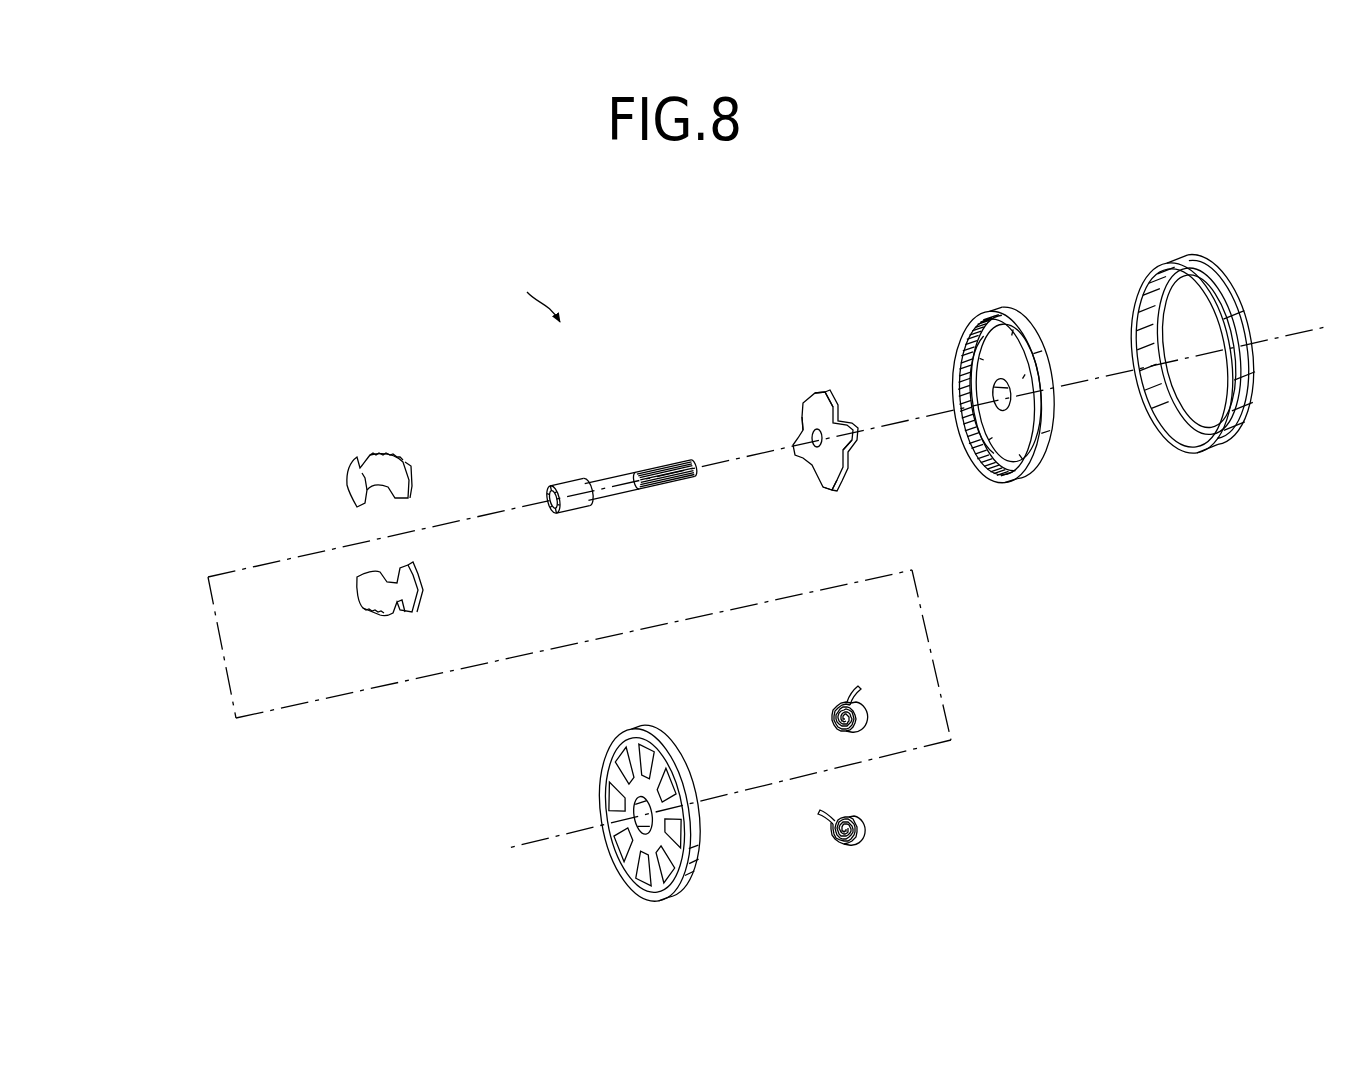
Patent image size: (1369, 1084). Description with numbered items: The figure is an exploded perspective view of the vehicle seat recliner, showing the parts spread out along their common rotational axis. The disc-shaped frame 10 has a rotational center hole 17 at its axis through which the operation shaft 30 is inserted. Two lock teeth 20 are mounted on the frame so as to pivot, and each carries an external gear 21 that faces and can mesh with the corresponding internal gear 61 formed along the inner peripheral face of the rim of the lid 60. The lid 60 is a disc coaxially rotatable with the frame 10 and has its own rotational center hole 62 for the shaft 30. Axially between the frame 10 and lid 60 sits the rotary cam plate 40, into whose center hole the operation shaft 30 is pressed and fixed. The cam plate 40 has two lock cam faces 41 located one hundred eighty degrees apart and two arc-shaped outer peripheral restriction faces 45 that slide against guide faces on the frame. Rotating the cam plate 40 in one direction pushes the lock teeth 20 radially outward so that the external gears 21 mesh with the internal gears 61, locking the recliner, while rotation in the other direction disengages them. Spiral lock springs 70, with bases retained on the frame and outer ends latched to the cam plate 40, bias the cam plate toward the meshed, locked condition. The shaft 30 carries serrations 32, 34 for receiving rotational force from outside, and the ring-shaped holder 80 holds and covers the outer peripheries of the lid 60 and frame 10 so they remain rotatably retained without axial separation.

The frame 10 is at (600, 748).
The rotational center hole 17 is at (640, 815).
The lock tooth 20 is at (352, 455).
The external gear 21 is at (400, 455).
The operation shaft 30 is at (598, 478).
The serration 32 is at (660, 458).
The serration 34 is at (548, 482).
The cam plate 40 is at (801, 387).
The lock cam face 41 is at (820, 393).
The outer peripheral restriction face 45 is at (795, 428).
The lid 60 is at (988, 305).
The internal gear 61 is at (975, 452).
The rotational center hole 62 is at (1003, 392).
The lock spring 70 is at (832, 700).
The ring-shaped holder 80 is at (1203, 271).